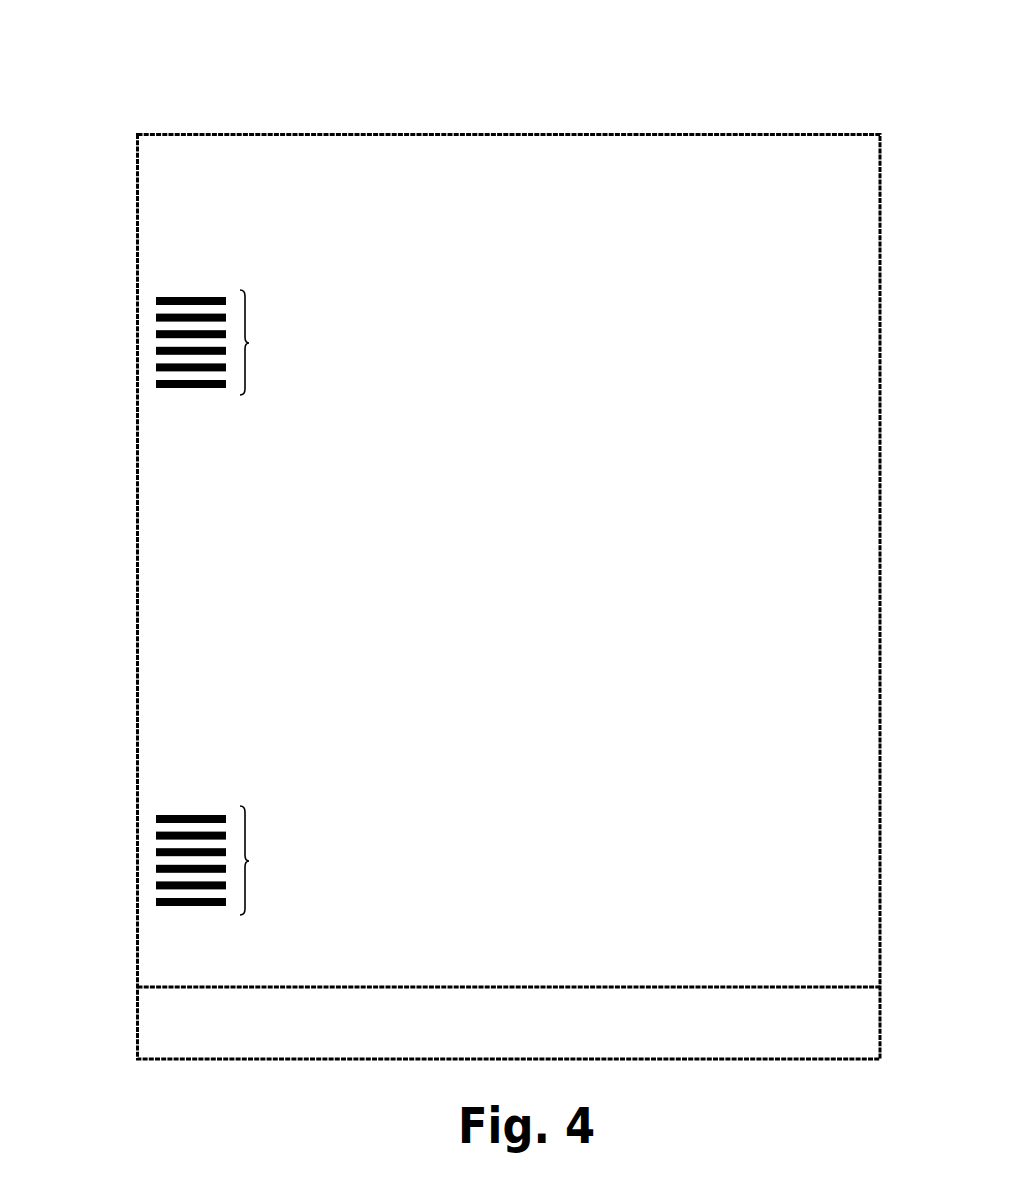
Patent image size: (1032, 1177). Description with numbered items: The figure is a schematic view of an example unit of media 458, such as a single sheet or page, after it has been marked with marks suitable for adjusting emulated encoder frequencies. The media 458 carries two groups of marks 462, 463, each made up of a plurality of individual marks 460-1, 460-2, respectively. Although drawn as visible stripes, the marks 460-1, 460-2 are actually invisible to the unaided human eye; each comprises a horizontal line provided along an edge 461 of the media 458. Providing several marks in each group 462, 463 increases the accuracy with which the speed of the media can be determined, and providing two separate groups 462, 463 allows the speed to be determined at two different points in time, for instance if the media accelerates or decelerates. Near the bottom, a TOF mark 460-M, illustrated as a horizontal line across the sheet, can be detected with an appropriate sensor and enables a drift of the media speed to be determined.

The unit of media 458 is at (814, 66).
The individual marks 460-1 is at (156, 317).
The individual marks 460-2 is at (156, 835).
The TOF mark 460-M is at (160, 988).
The edge of the media 461 is at (147, 586).
The group of marks 462 is at (263, 342).
The group of marks 463 is at (263, 860).